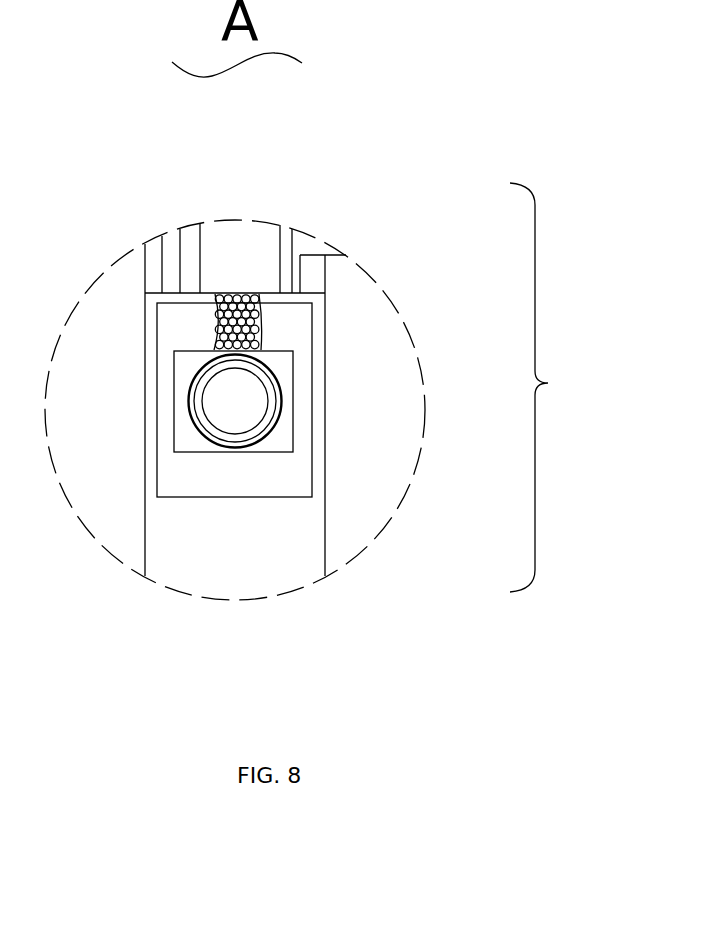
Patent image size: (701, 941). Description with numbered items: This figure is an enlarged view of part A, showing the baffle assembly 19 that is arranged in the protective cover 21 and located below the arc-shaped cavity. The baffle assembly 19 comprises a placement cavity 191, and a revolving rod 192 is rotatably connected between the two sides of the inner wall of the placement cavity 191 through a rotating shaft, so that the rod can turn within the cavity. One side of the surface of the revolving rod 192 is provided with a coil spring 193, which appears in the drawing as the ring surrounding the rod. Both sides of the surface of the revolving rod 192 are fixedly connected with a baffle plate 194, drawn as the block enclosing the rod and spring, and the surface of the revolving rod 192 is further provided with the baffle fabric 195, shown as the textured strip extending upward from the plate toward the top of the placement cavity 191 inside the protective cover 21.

The baffle assembly 19 is at (554, 387).
The protective cover 21 is at (172, 540).
The placement cavity 191 is at (250, 469).
The revolving rod 192 is at (240, 418).
The coil spring 193 is at (280, 410).
The baffle plate 194 is at (273, 359).
The baffle fabric 195 is at (252, 298).